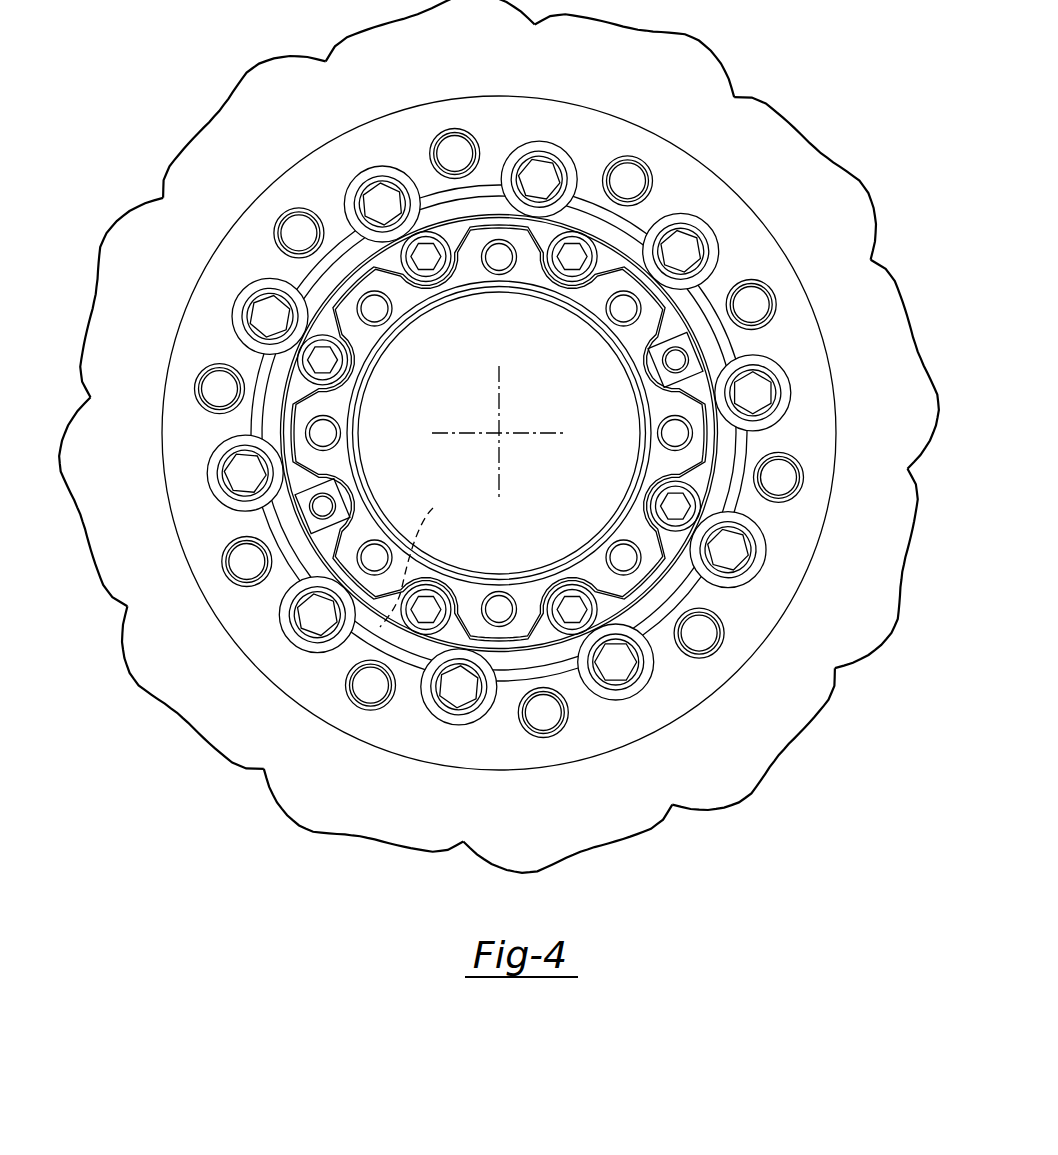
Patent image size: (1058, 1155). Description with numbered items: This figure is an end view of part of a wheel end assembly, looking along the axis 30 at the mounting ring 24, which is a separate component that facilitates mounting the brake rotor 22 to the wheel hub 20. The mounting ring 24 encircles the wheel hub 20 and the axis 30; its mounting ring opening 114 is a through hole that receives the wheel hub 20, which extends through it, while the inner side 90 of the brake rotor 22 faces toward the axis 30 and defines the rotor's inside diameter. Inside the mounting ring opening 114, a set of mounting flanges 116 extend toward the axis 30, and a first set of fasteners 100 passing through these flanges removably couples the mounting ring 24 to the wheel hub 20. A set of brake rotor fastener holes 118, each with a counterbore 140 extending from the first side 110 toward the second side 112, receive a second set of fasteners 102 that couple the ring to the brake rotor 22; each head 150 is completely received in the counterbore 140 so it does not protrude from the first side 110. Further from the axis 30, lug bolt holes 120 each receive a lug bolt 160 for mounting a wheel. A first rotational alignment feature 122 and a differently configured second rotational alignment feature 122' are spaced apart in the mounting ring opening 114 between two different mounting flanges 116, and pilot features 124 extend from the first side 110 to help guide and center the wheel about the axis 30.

The brake rotor 22 is at (718, 62).
The mounting ring 24 is at (743, 200).
The wheel hub 20 is at (695, 293).
The axis 30 is at (505, 428).
The inner side 90 is at (417, 561).
The first set of fasteners 100 is at (358, 342).
The first side 110 is at (360, 153).
The second side 112 is at (388, 135).
The mounting ring opening 114 is at (493, 218).
The mounting flanges 116 is at (372, 355).
The brake rotor fastener holes 118 is at (717, 205).
The counterbore 140 is at (688, 223).
The lug bolt holes 120 is at (455, 128).
The first rotational alignment feature 122 is at (362, 500).
The second rotational alignment feature 122' is at (621, 359).
The pilot features 124 is at (396, 262).
The second set of fasteners 102 is at (521, 450).
The head 150 is at (264, 276).
The lug bolts 160 is at (499, 433).